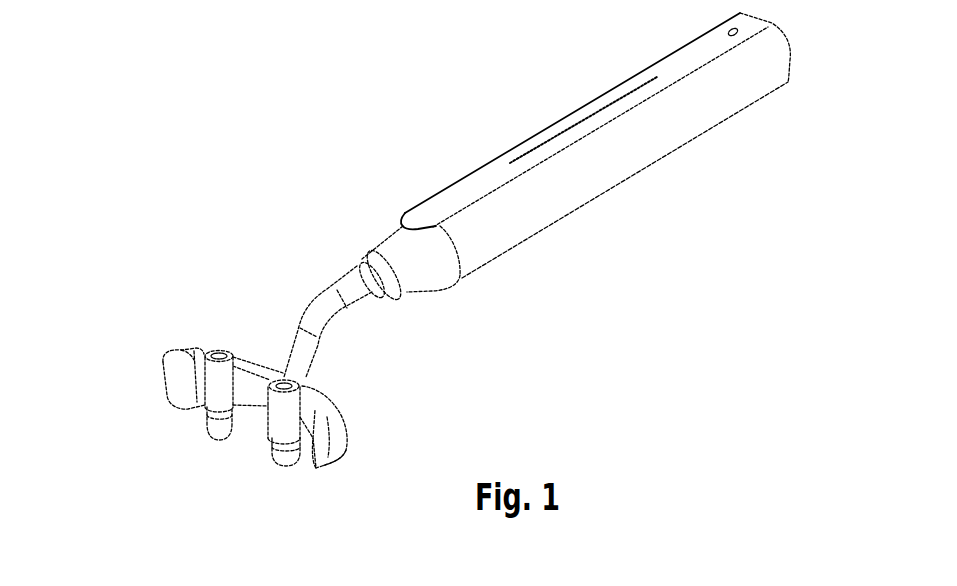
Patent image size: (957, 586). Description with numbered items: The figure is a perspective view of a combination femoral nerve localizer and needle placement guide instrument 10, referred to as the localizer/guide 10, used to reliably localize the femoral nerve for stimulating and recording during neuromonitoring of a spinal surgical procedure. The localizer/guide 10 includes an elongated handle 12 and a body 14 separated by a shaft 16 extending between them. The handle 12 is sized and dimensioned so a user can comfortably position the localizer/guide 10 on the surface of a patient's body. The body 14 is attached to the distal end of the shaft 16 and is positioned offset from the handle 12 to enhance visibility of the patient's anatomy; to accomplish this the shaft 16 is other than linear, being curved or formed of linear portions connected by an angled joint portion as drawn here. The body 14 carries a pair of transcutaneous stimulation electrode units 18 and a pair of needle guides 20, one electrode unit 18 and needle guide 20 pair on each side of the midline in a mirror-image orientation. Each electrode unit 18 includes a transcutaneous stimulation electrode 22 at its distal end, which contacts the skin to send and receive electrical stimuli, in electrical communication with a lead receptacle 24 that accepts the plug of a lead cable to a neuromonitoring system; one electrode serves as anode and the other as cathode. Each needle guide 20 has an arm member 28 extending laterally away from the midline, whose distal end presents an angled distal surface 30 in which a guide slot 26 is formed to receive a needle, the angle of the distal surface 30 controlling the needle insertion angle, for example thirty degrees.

The combination femoral nerve localizer and needle placement guide instrument 10 is at (324, 112).
The handle 12 is at (598, 97).
The body 14 is at (130, 418).
The shaft 16 is at (322, 295).
The transcutaneous stimulation electrode unit 18 is at (212, 458).
The needle guide 20 is at (140, 359).
The transcutaneous stimulation electrode 22 is at (213, 432).
The lead receptacle 24 is at (225, 352).
The guide slot 26 is at (332, 460).
The arm member 28 is at (182, 352).
The angled distal surface 30 is at (324, 468).